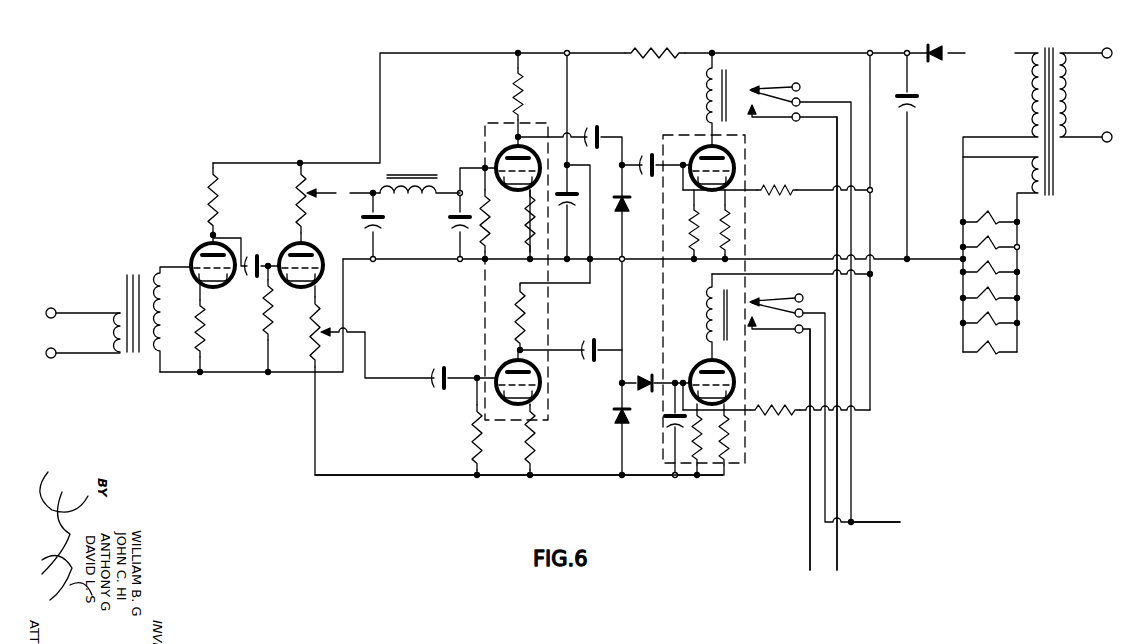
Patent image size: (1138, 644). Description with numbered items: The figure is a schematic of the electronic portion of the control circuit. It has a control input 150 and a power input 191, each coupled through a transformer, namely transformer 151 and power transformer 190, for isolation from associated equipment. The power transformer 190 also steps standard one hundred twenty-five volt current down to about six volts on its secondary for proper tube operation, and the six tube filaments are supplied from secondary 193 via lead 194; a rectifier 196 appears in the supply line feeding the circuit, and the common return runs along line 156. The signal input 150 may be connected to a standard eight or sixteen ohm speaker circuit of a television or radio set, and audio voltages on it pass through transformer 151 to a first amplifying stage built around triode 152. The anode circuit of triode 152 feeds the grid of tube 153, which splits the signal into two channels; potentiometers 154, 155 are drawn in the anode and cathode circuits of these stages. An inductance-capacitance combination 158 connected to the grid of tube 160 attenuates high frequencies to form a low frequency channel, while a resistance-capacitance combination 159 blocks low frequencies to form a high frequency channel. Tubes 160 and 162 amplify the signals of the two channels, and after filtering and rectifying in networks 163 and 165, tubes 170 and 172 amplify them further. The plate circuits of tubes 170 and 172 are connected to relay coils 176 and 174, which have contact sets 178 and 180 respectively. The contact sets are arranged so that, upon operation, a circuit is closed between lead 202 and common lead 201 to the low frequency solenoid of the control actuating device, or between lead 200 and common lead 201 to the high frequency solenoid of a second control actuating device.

The control input 150 is at (98, 312).
The transformer 151 is at (127, 293).
The triode 152 is at (193, 258).
The tube 153 is at (313, 247).
The potentiometer 154 is at (308, 195).
The potentiometer 155 is at (343, 330).
The common return line 156 is at (385, 476).
The inductance-capacitance combination 158 is at (420, 236).
The resistance-capacitance combination 159 is at (435, 372).
The tube 160 is at (512, 193).
The tube 162 is at (547, 392).
The filtering and rectifying network 163 is at (615, 148).
The filtering and rectifying network 165 is at (623, 370).
The tube 170 is at (732, 150).
The tube 172 is at (730, 388).
The relay coil 174 is at (703, 313).
The relay coil 176 is at (728, 82).
The set of contacts 178 is at (795, 87).
The set of contacts 180 is at (810, 270).
The power transformer 190 is at (1057, 47).
The power input 191 is at (1108, 143).
The secondary 193 is at (1033, 197).
The lead 194 is at (927, 261).
The rectifier diode 196 is at (942, 63).
The lead 200 is at (810, 498).
The common lead 201 is at (887, 525).
The lead 202 is at (840, 507).